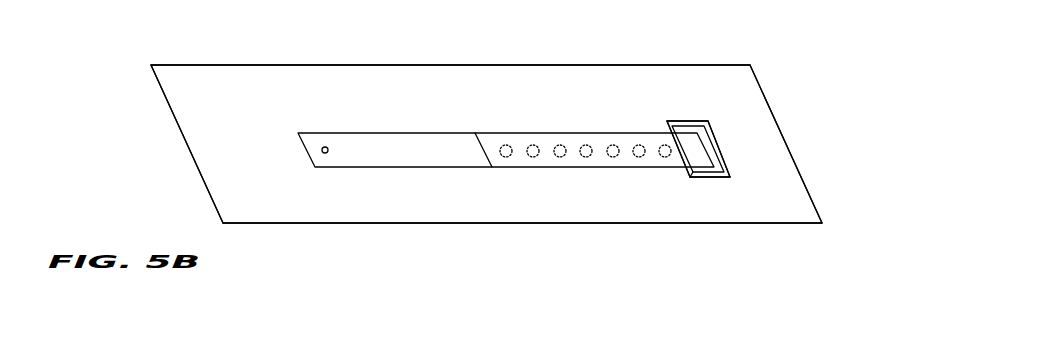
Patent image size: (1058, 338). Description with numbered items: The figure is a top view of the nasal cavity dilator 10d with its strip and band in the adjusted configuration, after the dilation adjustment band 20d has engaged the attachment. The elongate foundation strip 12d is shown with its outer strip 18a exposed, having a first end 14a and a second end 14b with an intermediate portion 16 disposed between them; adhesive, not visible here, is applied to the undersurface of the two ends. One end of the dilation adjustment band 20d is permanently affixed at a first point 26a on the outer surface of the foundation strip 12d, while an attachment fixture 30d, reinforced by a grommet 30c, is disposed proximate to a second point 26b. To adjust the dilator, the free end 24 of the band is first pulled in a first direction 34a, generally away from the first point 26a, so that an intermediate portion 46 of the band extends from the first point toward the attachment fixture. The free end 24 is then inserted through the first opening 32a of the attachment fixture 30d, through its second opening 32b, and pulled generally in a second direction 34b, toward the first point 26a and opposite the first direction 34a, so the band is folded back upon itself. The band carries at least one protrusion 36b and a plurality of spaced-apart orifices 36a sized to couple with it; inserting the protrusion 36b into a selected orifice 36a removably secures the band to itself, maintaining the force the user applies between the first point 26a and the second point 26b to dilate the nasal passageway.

The nasal cavity dilator 10d is at (560, 244).
The foundation strip 12d is at (316, 224).
The first end 14a is at (189, 148).
The second end 14b is at (815, 200).
The intermediate portion 16 is at (473, 80).
The outer strip 18a is at (215, 86).
The dilation adjustment band 20d is at (637, 133).
The free end 24 is at (480, 139).
The first point 26a is at (320, 152).
The second point 26b is at (690, 172).
The grommet 30c is at (698, 178).
The attachment fixture 30d is at (722, 178).
The first opening 32a is at (708, 125).
The second opening 32b is at (728, 168).
The first direction 34a is at (478, 185).
The second direction 34b is at (550, 118).
The spaced-apart orifices 36a is at (528, 153).
The protrusion 36b is at (540, 158).
The intermediate portion of the dilation adjustment band 46 is at (503, 133).